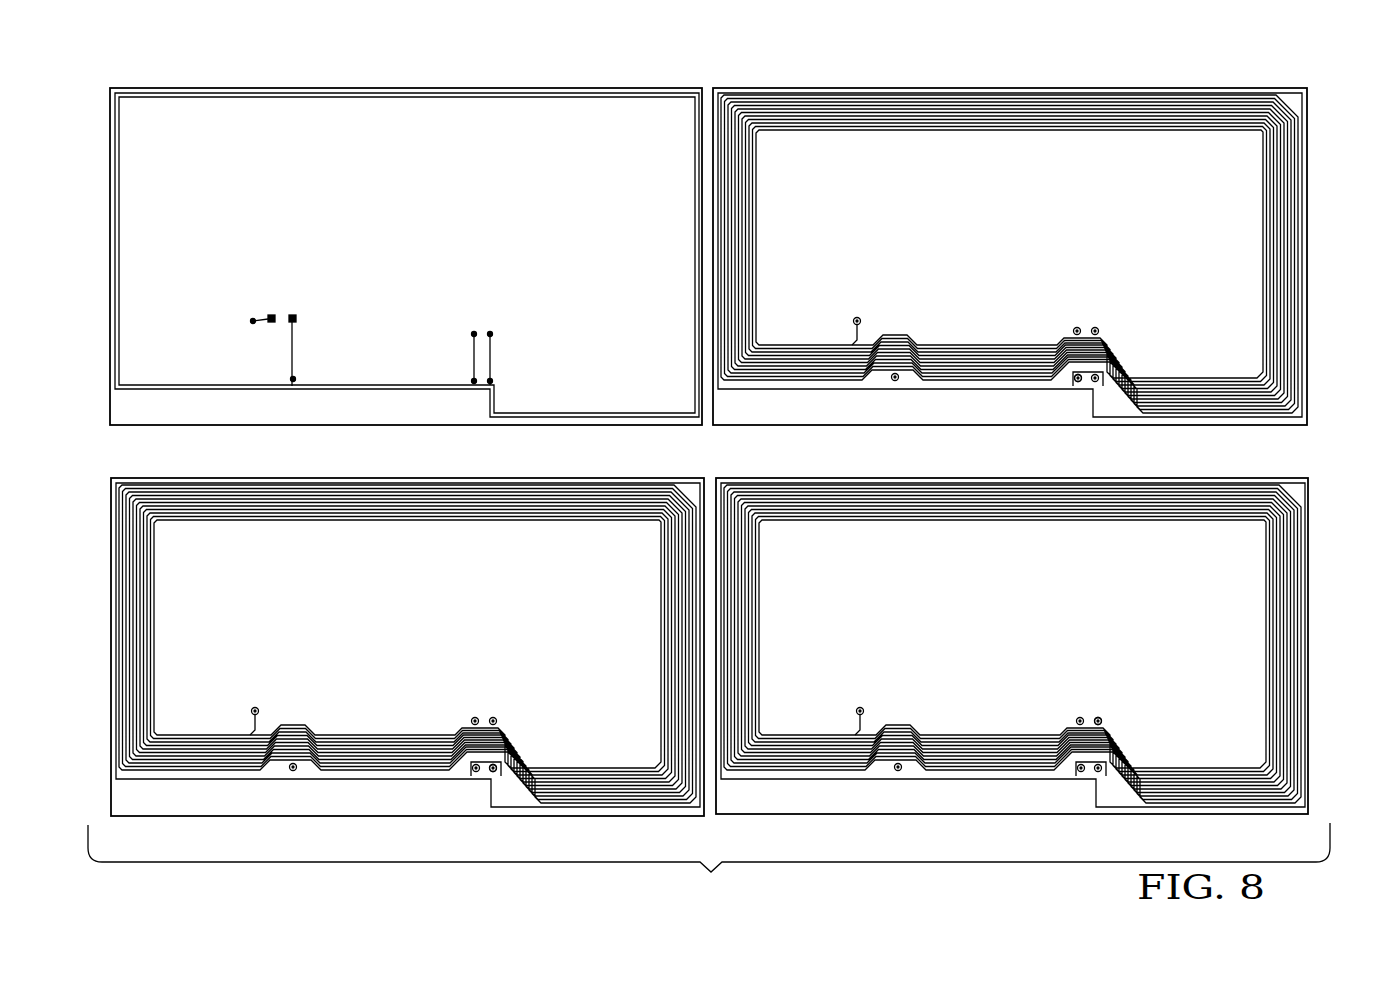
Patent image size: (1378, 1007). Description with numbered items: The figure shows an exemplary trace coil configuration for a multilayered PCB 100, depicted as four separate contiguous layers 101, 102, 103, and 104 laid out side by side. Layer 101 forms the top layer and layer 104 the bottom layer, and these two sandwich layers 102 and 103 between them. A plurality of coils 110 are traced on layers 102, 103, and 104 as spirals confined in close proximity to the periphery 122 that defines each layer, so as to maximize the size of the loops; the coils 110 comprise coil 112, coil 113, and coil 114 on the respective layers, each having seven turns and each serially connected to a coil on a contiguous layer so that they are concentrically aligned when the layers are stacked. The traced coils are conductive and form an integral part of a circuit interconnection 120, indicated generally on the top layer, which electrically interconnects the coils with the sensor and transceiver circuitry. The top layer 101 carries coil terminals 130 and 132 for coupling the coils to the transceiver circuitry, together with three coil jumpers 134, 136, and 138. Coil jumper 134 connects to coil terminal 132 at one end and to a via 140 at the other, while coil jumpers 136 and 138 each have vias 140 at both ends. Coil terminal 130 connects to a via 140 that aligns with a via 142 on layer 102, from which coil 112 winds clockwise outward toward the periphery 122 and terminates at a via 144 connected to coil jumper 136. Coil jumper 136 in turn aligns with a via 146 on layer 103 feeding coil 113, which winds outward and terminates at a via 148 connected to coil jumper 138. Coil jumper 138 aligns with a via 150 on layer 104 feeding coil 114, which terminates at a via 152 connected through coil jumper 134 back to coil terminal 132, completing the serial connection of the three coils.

The multilayered PCB 100 is at (709, 864).
The top layer 101 is at (106, 172).
The layer 102 is at (820, 86).
The layer 103 is at (106, 564).
The bottom layer 104 is at (785, 476).
The coils 110 is at (704, 426).
The coil 112 is at (1297, 258).
The coil 113 is at (128, 630).
The coil 114 is at (1297, 645).
The circuit interconnection 120 is at (199, 234).
The periphery 122 is at (380, 392).
The coil terminal 130 is at (272, 315).
The coil terminal 132 is at (292, 315).
The coil jumper 134 is at (294, 356).
The coil jumper 136 is at (472, 357).
The coil jumper 138 is at (490, 358).
The via 140 is at (292, 381).
The via 142 is at (856, 324).
The via 144 is at (1078, 382).
The via 146 is at (475, 728).
The via 148 is at (493, 773).
The via 150 is at (1096, 727).
The via 152 is at (896, 772).